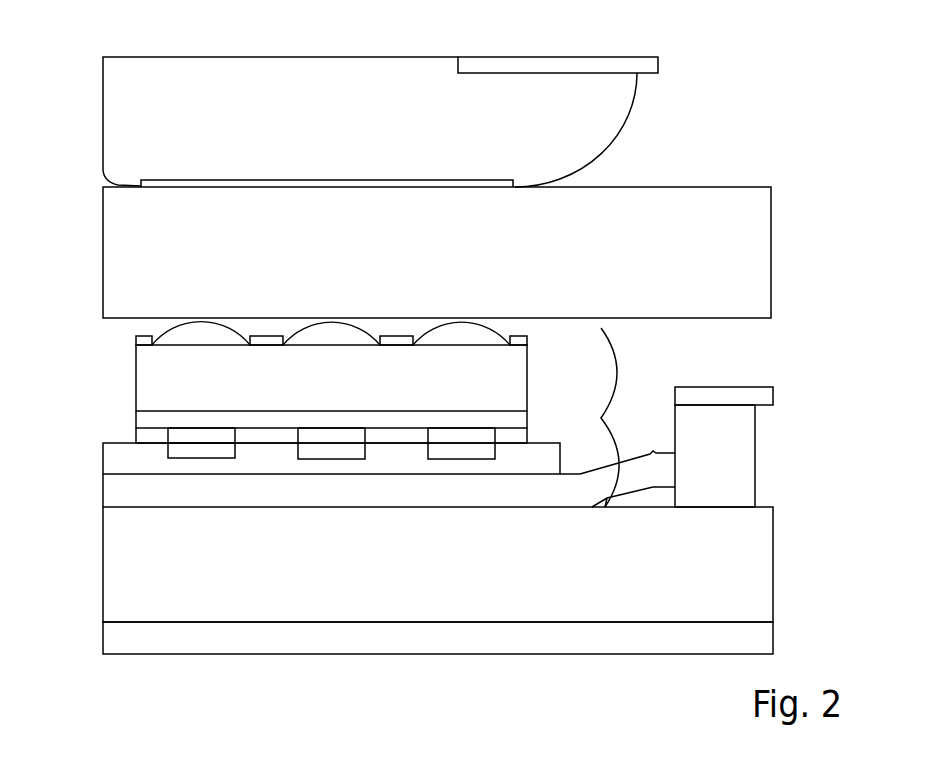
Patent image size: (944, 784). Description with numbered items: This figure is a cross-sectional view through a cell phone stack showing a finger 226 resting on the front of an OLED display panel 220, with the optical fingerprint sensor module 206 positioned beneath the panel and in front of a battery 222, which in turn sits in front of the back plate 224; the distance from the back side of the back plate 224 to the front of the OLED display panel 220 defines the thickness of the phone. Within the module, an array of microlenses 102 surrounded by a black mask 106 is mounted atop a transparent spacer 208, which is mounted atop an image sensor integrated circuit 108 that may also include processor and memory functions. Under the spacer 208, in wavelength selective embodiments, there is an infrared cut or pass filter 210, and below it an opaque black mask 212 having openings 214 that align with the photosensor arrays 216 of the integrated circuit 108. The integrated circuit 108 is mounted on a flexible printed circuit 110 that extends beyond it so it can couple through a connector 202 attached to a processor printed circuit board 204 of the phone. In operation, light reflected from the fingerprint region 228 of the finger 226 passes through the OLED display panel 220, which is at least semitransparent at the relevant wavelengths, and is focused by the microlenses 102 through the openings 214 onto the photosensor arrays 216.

The microlenses 102 is at (195, 328).
The black mask 106 is at (137, 342).
The image sensor integrated circuit 108 is at (518, 459).
The flexible printed circuit 110 is at (153, 485).
The connector 202 is at (733, 469).
The processor printed circuit board 204 is at (692, 387).
The fingerprint sensor module 206 is at (603, 418).
The transparent spacer 208 is at (450, 396).
The infrared cut or pass filter 210 is at (145, 422).
The opaque black mask 212 is at (135, 434).
The openings 214 is at (202, 435).
The photosensor arrays 216 is at (200, 450).
The OLED display panel 220 is at (557, 264).
The battery 222 is at (495, 585).
The back plate 224 is at (545, 650).
The finger 226 is at (420, 135).
The fingerprint region 228 is at (373, 180).